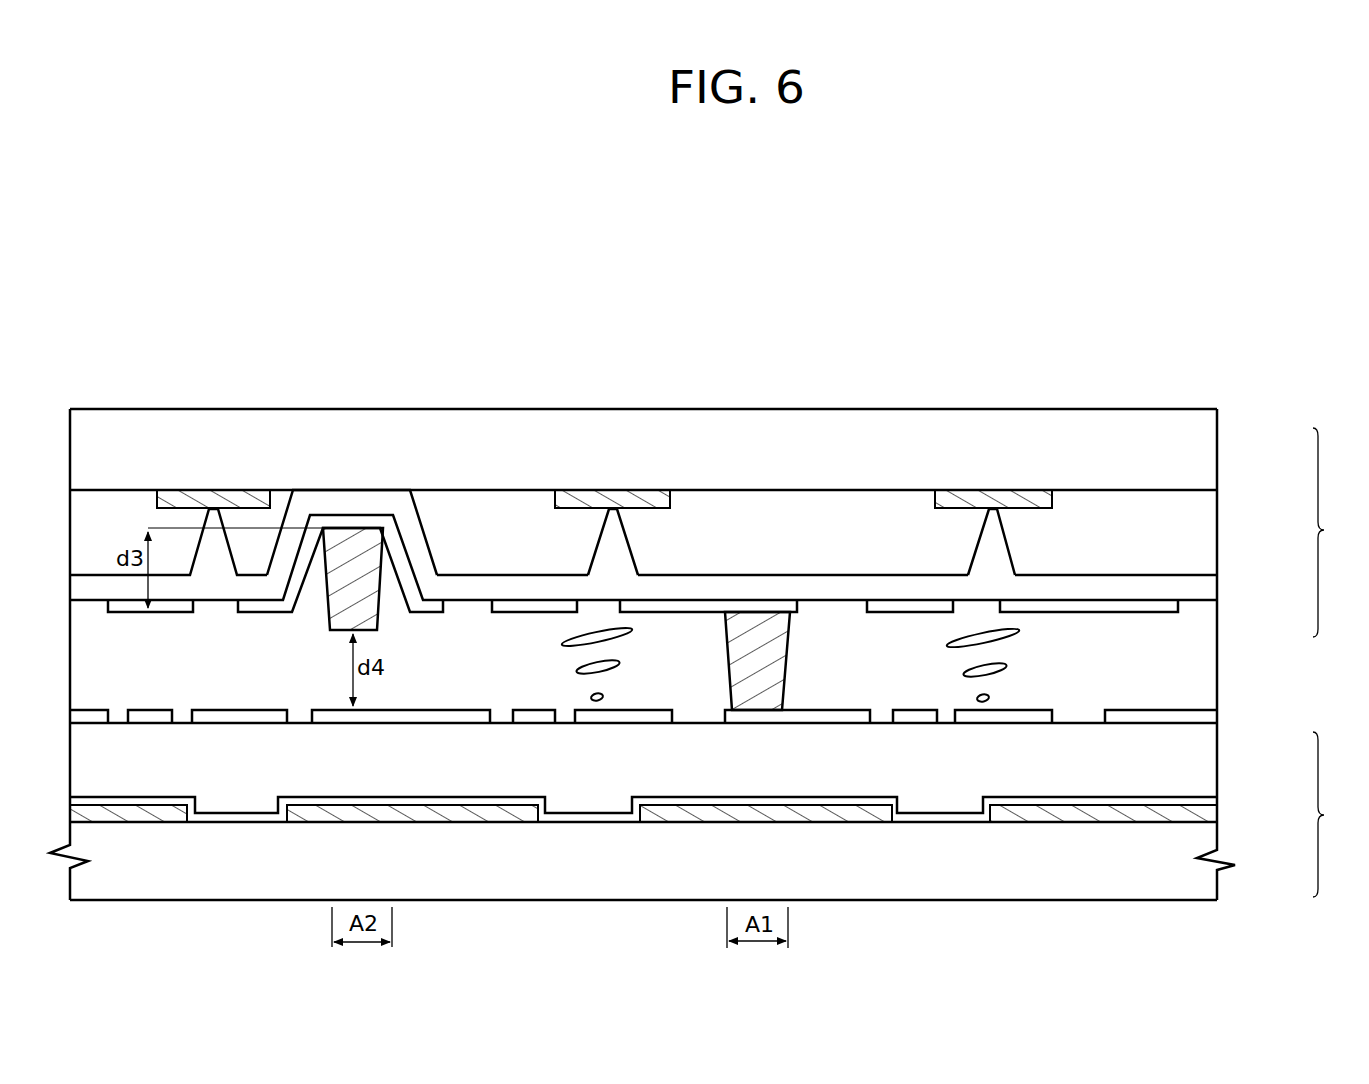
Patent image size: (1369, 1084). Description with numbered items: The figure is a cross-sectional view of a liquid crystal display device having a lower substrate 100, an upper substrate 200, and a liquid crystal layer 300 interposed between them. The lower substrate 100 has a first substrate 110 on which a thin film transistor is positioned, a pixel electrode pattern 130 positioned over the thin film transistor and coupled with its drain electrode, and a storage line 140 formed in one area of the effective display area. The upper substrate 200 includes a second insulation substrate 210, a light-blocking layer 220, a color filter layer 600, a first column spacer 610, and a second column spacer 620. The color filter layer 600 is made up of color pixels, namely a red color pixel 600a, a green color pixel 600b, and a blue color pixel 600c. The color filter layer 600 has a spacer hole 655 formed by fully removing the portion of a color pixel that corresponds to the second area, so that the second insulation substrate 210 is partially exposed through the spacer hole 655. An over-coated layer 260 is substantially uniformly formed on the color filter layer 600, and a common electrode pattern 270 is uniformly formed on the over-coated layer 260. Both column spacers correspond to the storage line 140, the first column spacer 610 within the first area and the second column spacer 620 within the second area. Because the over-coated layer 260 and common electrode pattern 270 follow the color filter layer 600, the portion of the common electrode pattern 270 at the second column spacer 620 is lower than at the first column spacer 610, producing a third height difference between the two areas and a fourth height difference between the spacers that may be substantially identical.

The lower substrate 100 is at (1339, 814).
The first substrate 110 is at (1210, 885).
The pixel electrode pattern 130 is at (1210, 720).
The storage line 140 is at (1210, 818).
The upper substrate 200 is at (1339, 532).
The second insulation substrate 210 is at (1210, 433).
The light-blocking layer 220 is at (1022, 496).
The over-coated layer 260 is at (1210, 588).
The common electrode pattern 270 is at (1178, 606).
The liquid crystal layer 300 is at (1210, 670).
The color filter layer 600 is at (1222, 538).
The red color pixel 600a is at (740, 505).
The green color pixel 600b is at (1013, 528).
The blue color pixel 600c is at (507, 505).
The first column spacer 610 is at (775, 662).
The second column spacer 620 is at (376, 620).
The spacer hole 655 is at (353, 490).